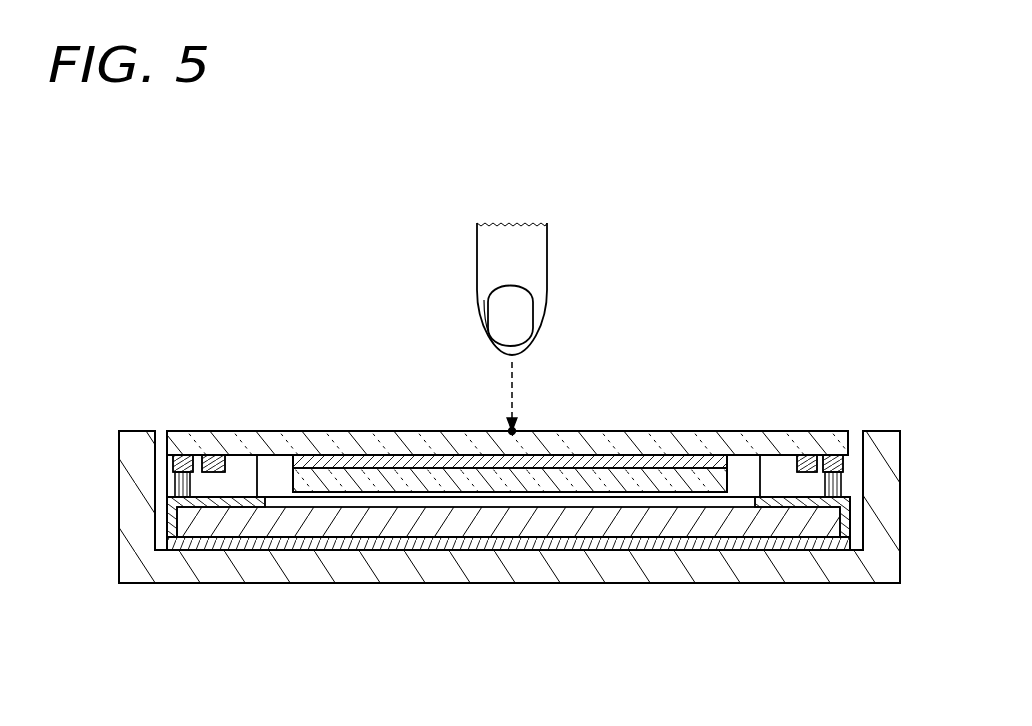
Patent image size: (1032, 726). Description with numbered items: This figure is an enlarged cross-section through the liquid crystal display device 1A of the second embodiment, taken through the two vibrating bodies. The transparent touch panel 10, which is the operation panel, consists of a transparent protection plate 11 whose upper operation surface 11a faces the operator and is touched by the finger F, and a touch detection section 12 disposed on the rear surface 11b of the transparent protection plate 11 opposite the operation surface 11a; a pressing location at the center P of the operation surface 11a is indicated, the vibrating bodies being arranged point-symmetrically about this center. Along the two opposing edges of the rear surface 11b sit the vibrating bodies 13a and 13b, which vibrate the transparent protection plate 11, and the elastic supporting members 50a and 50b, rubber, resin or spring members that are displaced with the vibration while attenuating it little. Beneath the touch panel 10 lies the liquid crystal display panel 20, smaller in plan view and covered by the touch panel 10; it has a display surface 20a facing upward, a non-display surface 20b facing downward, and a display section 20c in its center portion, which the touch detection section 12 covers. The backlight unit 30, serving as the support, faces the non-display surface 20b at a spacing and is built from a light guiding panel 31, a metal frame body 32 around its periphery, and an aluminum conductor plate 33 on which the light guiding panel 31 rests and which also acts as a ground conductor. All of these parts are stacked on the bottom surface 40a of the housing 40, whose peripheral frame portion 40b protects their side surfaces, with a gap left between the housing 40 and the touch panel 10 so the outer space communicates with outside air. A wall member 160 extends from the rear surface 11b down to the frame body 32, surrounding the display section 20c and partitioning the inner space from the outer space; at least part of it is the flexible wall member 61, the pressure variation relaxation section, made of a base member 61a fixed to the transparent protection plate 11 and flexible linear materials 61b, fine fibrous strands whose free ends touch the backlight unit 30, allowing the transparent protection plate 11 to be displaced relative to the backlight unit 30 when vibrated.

The liquid crystal display device 1A is at (680, 242).
The finger F is at (528, 272).
The center of the operation surface P is at (517, 430).
The touch panel 10 is at (348, 298).
The transparent protection plate 11 is at (312, 445).
The operation surface 11a is at (416, 434).
The rear surface 11b is at (849, 450).
The touch detection section 12 is at (365, 460).
The vibrating body 13a is at (203, 490).
The vibrating body 13b is at (825, 480).
The liquid crystal display panel 20 is at (738, 455).
The display surface 20a is at (683, 483).
The non-display surface 20b is at (680, 497).
The display section 20c is at (622, 463).
The backlight unit 30 is at (840, 650).
The light guiding panel 31 is at (729, 505).
The frame body 32 is at (772, 522).
The conductor plate 33 is at (800, 540).
The housing 40 is at (855, 577).
The bottom surface 40a is at (158, 551).
The frame portion 40b is at (140, 457).
The elastic supporting member 50a is at (247, 463).
The elastic supporting member 50b is at (770, 462).
The flexible wall member 61 is at (340, 658).
The base member 61a is at (195, 550).
The flexible linear materials 61b is at (172, 552).
The wall member 160 is at (840, 462).